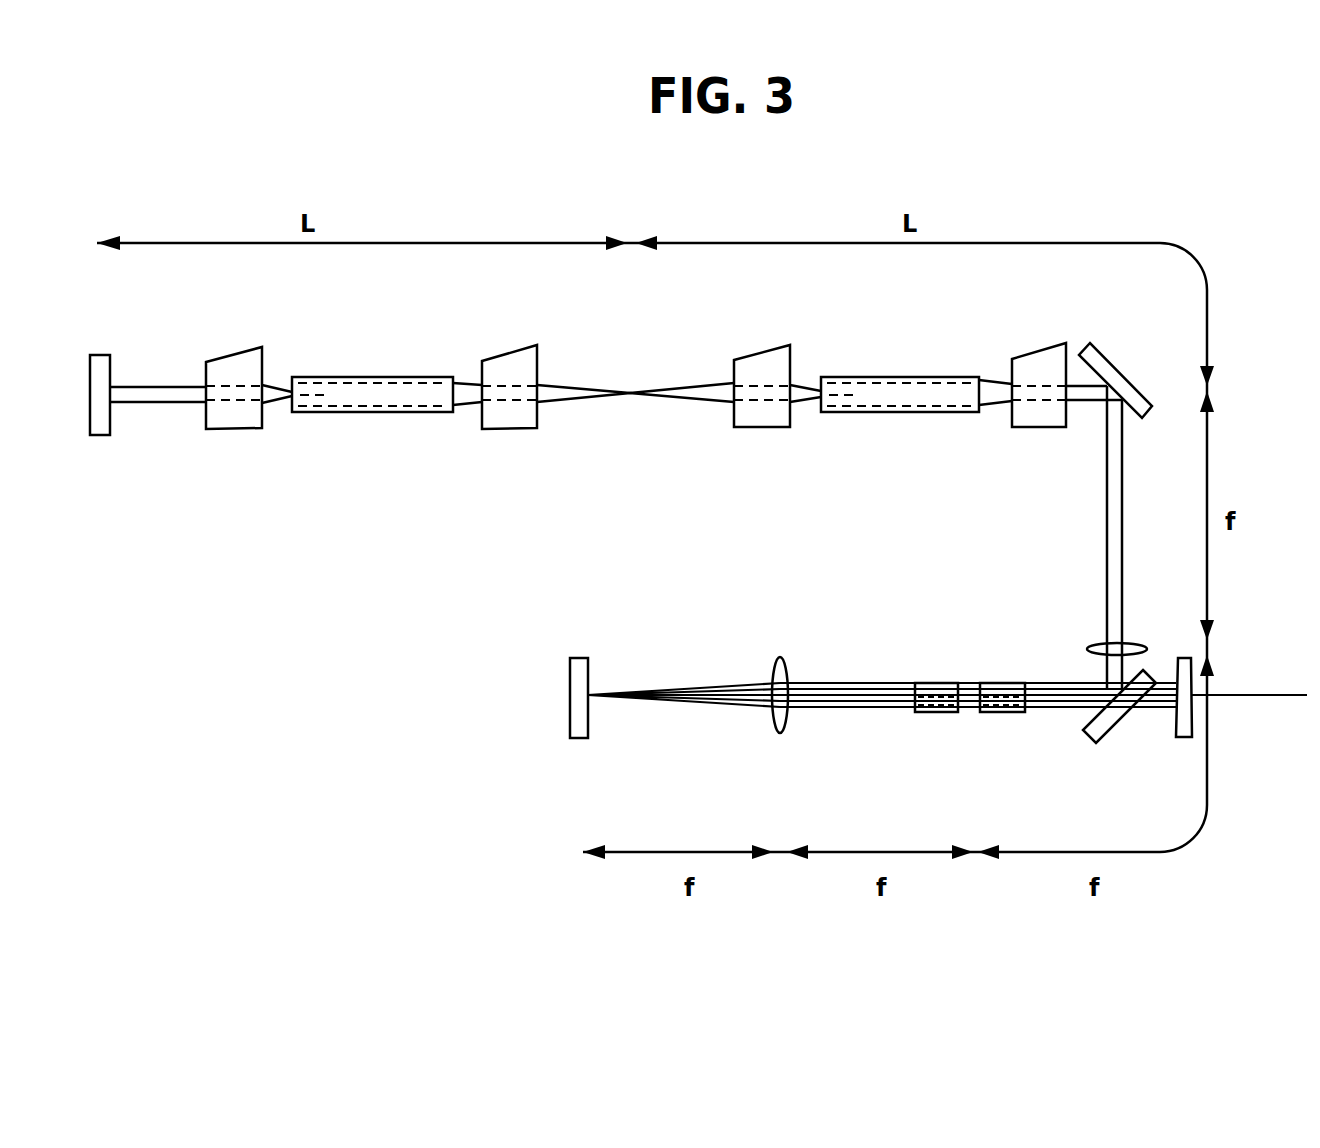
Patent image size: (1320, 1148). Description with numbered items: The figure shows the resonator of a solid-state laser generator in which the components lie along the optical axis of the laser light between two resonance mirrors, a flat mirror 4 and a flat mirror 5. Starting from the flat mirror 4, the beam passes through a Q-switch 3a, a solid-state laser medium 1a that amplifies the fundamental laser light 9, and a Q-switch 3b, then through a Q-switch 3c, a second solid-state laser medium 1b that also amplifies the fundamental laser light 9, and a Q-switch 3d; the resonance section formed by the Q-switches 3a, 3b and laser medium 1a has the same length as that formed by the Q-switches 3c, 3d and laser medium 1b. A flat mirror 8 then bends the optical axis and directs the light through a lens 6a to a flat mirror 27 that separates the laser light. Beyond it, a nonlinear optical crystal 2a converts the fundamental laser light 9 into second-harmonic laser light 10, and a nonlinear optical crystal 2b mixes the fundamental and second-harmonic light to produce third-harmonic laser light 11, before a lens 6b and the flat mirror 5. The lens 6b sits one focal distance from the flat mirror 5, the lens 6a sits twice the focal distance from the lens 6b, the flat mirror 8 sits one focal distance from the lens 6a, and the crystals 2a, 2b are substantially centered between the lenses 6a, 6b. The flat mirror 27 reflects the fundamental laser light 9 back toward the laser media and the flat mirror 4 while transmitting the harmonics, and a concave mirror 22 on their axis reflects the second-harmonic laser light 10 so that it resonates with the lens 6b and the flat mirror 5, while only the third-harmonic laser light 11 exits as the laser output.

The flat mirror 4 is at (104, 437).
The Q-switch 3a is at (233, 355).
The solid-state laser medium 1a is at (368, 414).
The Q-switch 3b is at (511, 355).
The fundamental laser light 9 is at (636, 400).
The Q-switch 3c is at (768, 357).
The solid-state laser medium 1b is at (910, 414).
The Q-switch 3d is at (1043, 352).
The flat mirror 8 is at (1110, 355).
The lens 6a is at (1086, 648).
The second-harmonic laser light 10 is at (1193, 674).
The flat mirror 5 is at (578, 740).
The lens 6b is at (780, 734).
The nonlinear optical crystal 2a is at (937, 714).
The nonlinear optical crystal 2b is at (1002, 714).
The flat mirror 27 is at (1113, 733).
The concave mirror 22 is at (1186, 738).
The third-harmonic laser light 11 is at (1260, 697).